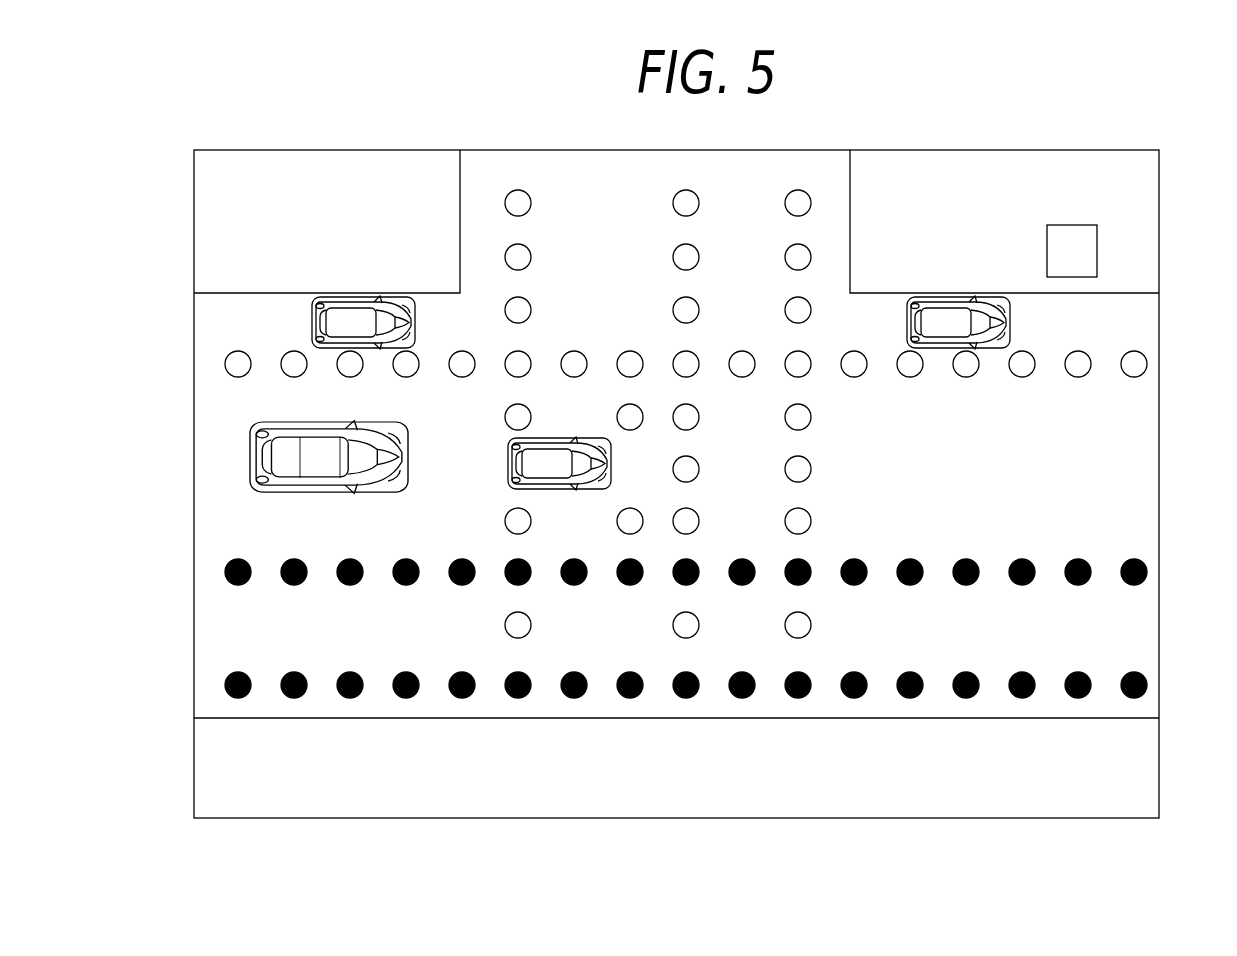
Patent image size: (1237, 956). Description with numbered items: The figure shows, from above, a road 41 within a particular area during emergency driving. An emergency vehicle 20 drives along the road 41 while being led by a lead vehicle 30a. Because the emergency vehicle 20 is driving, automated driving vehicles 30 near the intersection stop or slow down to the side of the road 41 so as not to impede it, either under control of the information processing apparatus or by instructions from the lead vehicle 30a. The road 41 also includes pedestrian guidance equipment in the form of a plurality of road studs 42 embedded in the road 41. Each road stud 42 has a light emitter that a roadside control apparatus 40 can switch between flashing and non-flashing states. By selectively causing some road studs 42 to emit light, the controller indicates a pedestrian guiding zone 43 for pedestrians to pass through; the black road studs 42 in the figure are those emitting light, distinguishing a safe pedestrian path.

The emergency vehicle 20 is at (322, 491).
The automated driving vehicle 30 is at (350, 300).
The lead vehicle 30a is at (548, 489).
The roadside control apparatus 40 is at (1073, 226).
The road 41 is at (1025, 472).
The road stud 42 is at (811, 520).
The pedestrian guiding zone 43 is at (1132, 640).